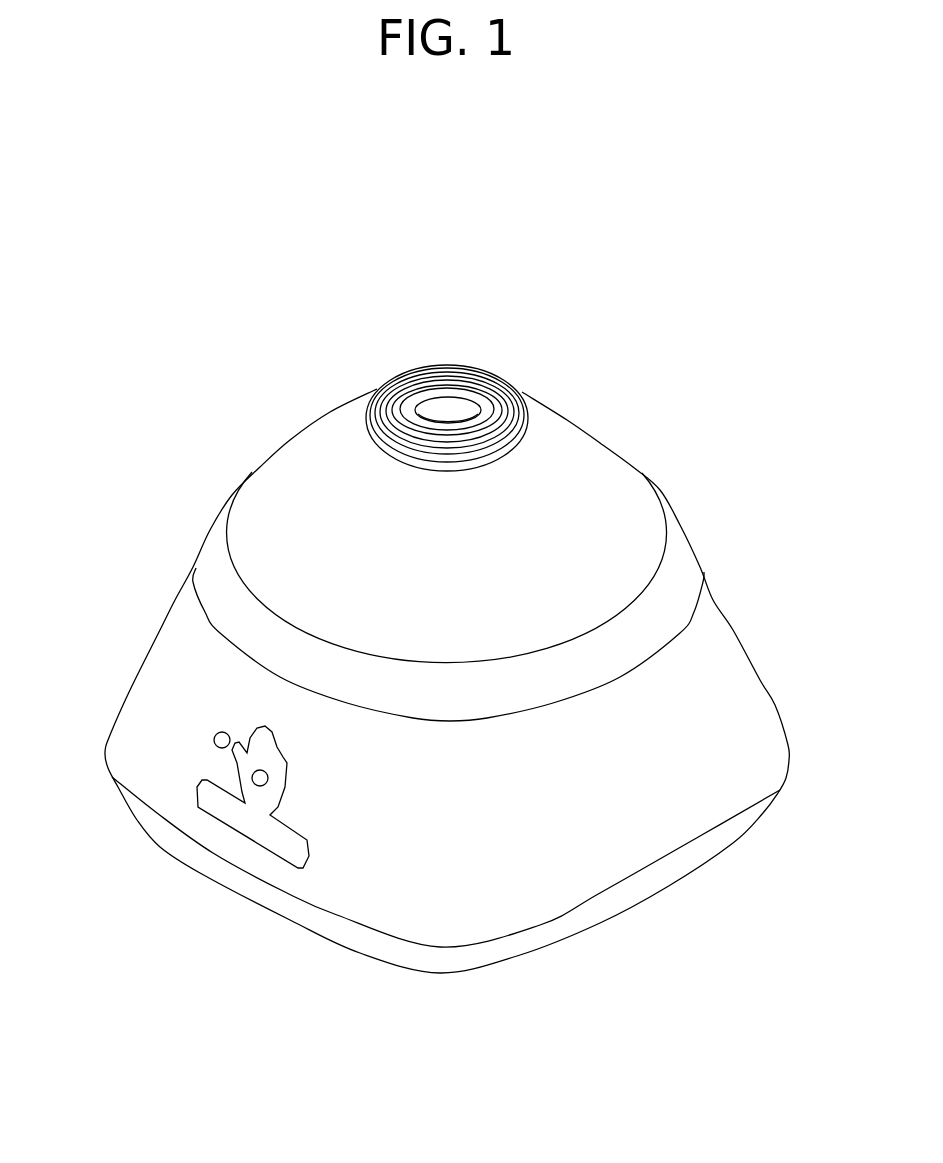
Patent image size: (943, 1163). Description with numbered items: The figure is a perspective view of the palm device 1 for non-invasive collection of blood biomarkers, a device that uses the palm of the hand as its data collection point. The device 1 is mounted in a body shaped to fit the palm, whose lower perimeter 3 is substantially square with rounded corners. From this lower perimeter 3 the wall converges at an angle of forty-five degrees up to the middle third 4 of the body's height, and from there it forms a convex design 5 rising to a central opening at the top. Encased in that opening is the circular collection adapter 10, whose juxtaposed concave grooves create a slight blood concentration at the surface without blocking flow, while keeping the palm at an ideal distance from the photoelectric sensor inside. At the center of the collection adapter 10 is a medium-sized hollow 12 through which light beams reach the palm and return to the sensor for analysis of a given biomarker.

The device 1 is at (732, 255).
The lower perimeter 3 is at (217, 853).
The middle third 4 is at (282, 642).
The convex design 5 is at (262, 522).
The collection adapter 10 is at (373, 388).
The medium-sized hollow 12 is at (467, 373).